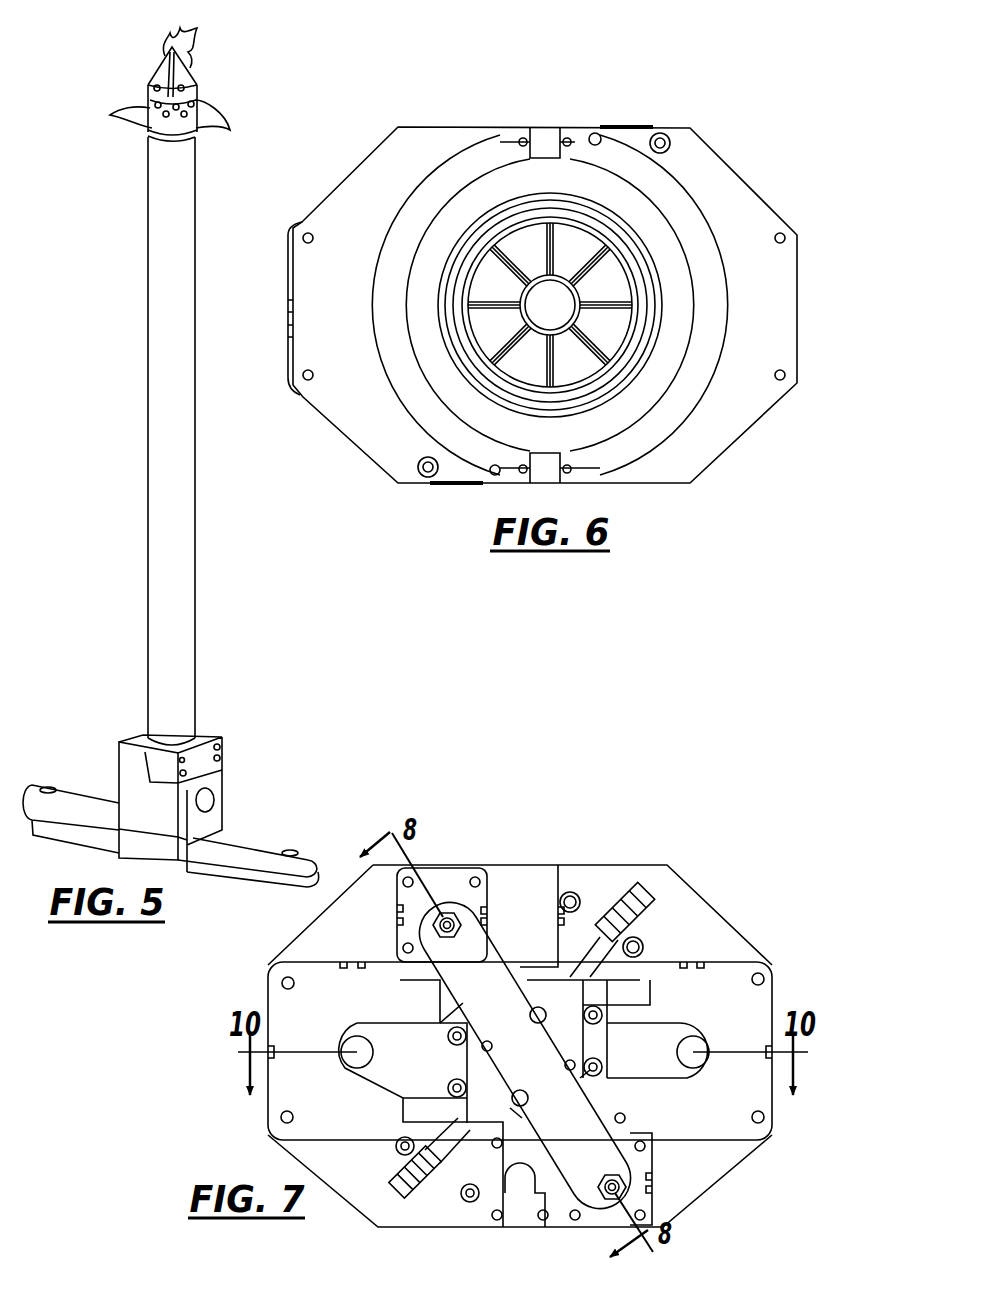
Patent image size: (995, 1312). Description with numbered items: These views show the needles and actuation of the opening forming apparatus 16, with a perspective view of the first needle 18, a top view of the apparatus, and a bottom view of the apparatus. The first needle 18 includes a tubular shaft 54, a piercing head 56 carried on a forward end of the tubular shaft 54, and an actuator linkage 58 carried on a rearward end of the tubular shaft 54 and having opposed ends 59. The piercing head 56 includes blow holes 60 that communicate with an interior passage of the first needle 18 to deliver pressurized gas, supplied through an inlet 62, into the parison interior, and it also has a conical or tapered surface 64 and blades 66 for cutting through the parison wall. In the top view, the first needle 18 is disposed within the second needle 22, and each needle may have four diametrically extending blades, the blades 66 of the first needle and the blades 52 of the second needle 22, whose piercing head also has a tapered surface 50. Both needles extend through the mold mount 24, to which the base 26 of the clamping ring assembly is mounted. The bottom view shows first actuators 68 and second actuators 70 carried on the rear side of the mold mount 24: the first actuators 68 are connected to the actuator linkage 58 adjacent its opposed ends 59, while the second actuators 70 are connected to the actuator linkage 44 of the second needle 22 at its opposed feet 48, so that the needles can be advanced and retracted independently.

In FIG. 6, the opening forming apparatus 16 is at (427, 96).
In FIG. 7, the opening forming apparatus 16 is at (642, 804).
In FIG. 5, the first needle 18 is at (110, 192).
In FIG. 6, the first needle 18 is at (567, 274).
In FIG. 7, the first needle 18 is at (523, 966).
In FIG. 6, the second needle 22 is at (625, 251).
In FIG. 7, the second needle 22 is at (454, 1114).
In FIG. 6, the mold mount 24 is at (692, 463).
In FIG. 7, the mold mount 24 is at (653, 873).
In FIG. 6, the base 26 is at (677, 407).
In FIG. 7, the actuator linkage 44 is at (702, 1022).
In FIG. 7, the feet 48 is at (400, 1065).
In FIG. 6, the tapered surface 50 is at (525, 367).
In FIG. 6, the blades 52 is at (552, 303).
In FIG. 5, the tubular shaft 54 is at (182, 212).
In FIG. 5, the piercing head 56 is at (190, 94).
In FIG. 5, the actuator linkage 58 is at (125, 842).
In FIG. 7, the actuator linkage 58 is at (514, 1062).
In FIG. 5, the opposed ends 59 is at (36, 790).
In FIG. 7, the opposed ends 59 is at (465, 917).
In FIG. 5, the blow holes 60 is at (152, 127).
In FIG. 5, the inlet 62 is at (203, 800).
In FIG. 5, the tapered surface 64 is at (180, 80).
In FIG. 6, the tapered surface 64 is at (552, 303).
In FIG. 5, the blades 66 is at (197, 30).
In FIG. 6, the blades 66 is at (552, 305).
In FIG. 7, the first actuators 68 is at (443, 880).
In FIG. 7, the second actuators 70 is at (297, 1010).